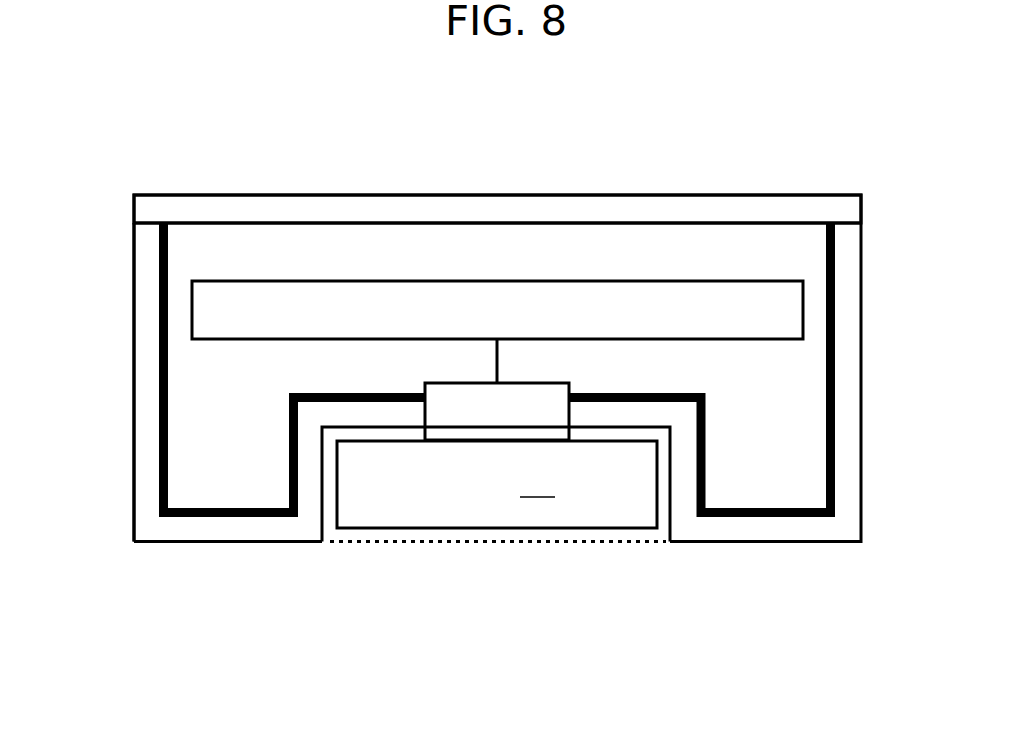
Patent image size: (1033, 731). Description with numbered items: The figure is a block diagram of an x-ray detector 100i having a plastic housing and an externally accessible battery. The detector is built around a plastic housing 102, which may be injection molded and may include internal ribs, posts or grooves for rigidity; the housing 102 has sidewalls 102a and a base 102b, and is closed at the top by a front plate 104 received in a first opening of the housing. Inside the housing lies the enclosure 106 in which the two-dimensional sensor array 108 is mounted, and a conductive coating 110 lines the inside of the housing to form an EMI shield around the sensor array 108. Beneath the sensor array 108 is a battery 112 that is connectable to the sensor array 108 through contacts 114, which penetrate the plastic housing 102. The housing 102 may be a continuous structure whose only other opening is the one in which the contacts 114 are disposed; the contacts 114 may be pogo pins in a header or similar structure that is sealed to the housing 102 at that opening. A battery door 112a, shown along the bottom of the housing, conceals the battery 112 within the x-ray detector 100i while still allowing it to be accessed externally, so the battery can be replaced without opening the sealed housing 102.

The x-ray detector 100i is at (163, 89).
The plastic housing 102 is at (32, 613).
The sidewalls 102a is at (133, 504).
The base 102b is at (207, 541).
The front plate 104 is at (191, 194).
The enclosure 106 is at (748, 365).
The two-dimensional sensor array 108 is at (482, 281).
The conductive coating 110 is at (160, 425).
The battery 112 is at (496, 484).
The battery door 112a is at (452, 542).
The contacts 114 is at (450, 383).